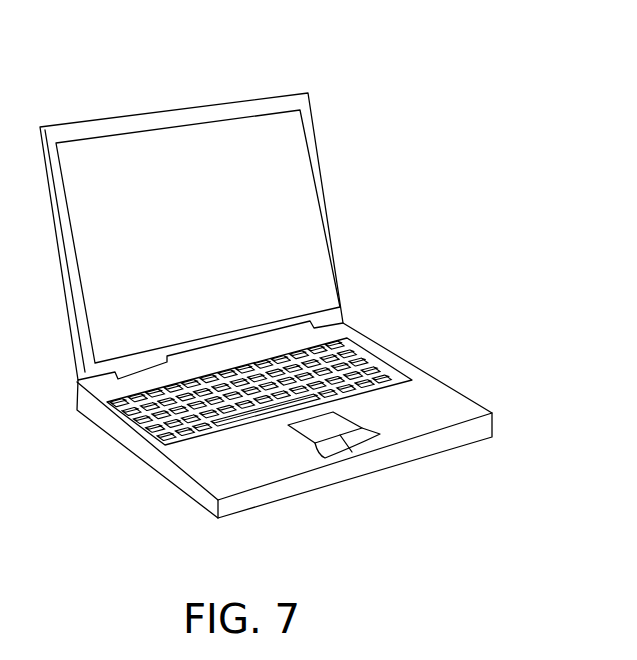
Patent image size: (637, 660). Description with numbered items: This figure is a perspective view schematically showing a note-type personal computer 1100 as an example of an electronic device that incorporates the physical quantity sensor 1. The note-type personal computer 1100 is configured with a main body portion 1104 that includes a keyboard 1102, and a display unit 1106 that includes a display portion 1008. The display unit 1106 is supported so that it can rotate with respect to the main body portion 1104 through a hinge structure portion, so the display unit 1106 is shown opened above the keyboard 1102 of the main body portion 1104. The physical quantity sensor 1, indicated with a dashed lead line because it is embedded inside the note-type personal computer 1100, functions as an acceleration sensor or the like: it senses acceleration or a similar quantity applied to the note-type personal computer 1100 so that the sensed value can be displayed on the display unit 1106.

The note-type personal computer 1100 is at (266, 298).
The display portion 1008 is at (184, 142).
The display unit 1106 is at (227, 215).
The keyboard 1102 is at (373, 352).
The main body portion 1104 is at (275, 472).
The physical quantity sensor 1 is at (443, 400).